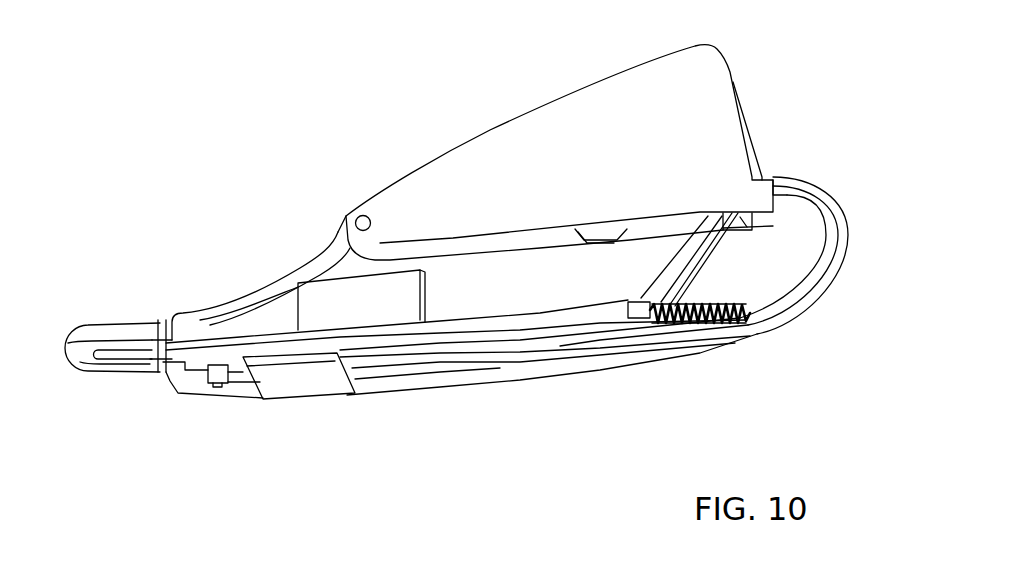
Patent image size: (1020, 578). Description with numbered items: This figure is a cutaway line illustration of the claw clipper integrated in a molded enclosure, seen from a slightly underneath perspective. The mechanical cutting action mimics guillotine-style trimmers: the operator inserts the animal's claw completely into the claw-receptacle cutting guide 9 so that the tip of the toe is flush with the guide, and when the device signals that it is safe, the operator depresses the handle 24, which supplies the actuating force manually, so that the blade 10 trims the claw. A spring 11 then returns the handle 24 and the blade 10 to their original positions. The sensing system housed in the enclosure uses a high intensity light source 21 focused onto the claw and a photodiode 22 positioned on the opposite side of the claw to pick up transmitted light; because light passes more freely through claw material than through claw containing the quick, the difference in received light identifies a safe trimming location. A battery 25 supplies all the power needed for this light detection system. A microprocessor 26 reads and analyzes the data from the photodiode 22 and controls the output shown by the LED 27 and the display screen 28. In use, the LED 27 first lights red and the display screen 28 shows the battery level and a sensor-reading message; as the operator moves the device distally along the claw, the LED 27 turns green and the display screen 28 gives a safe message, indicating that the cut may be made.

The claw-receptacle cutting guide 9 is at (110, 369).
The blade 10 is at (108, 327).
The spring 11 is at (760, 340).
The light source 21 is at (163, 340).
The photodiode 22 is at (201, 330).
The handle 24 is at (510, 150).
The battery 25 is at (593, 242).
The microprocessor 26 is at (322, 297).
The LED 27 is at (217, 387).
The display screen 28 is at (305, 383).